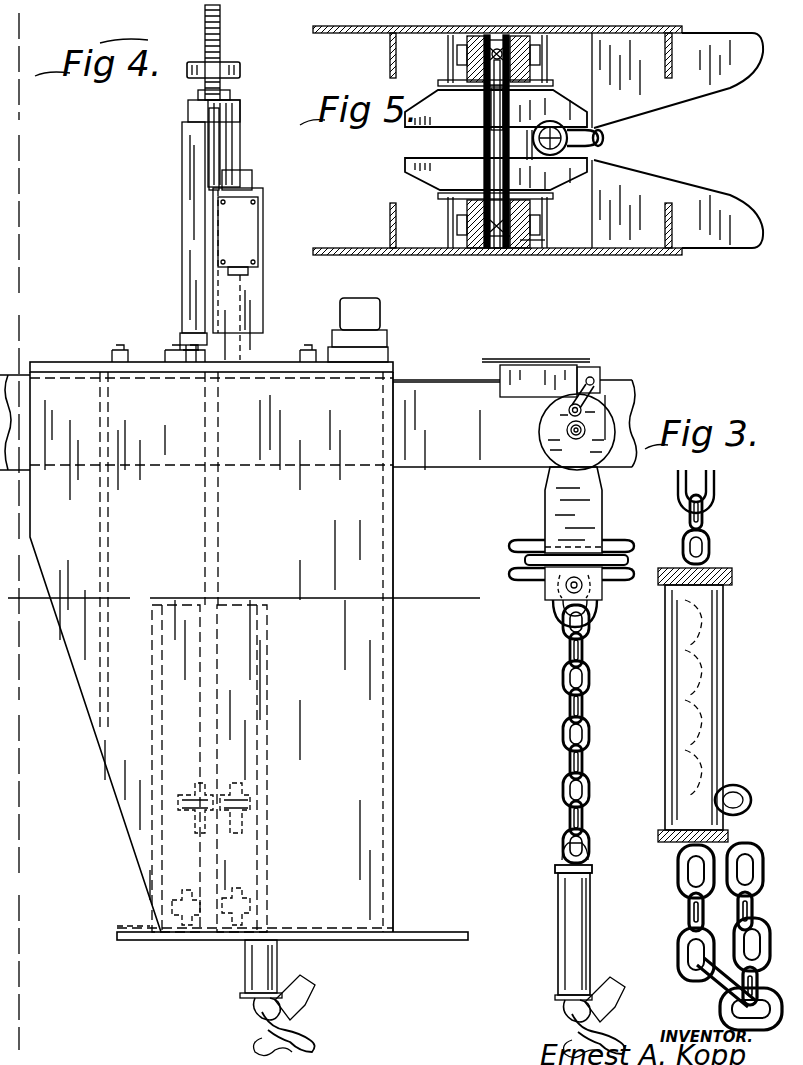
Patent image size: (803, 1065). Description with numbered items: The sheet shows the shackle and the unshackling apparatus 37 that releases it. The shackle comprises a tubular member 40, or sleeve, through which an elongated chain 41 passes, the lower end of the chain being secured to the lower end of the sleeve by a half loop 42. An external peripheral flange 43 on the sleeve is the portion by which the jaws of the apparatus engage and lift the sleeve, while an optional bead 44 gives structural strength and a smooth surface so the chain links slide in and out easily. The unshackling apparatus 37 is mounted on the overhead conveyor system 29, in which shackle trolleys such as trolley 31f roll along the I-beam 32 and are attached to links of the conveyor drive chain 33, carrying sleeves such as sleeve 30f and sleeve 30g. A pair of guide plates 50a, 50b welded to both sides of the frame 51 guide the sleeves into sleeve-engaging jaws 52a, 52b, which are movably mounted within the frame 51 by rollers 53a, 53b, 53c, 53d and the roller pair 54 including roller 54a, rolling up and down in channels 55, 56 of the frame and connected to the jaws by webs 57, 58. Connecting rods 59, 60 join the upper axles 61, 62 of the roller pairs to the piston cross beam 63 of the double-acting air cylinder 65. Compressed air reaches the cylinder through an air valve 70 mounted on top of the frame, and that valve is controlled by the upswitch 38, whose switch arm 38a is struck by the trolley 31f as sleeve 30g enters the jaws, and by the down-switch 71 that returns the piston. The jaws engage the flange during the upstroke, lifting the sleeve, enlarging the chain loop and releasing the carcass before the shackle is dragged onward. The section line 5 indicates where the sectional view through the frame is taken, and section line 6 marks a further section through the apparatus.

In FIG. 4, the section line 5— 5 is at (25, 588).
In FIG. 4, the section line 6- 6 is at (5, 13).
In FIG. 4, the overhead conveyor system 29 is at (437, 373).
In FIG. 3, the sleeve 30f is at (558, 905).
In FIG. 4, the sleeve 30g is at (242, 956).
In FIG. 3, the shackle trolley 31f is at (546, 510).
In FIG. 4, the I-beam 32 is at (460, 436).
In FIG. 3, the conveyor drive chain 33 is at (512, 544).
In FIG. 4, the unshackling apparatus 37 is at (314, 557).
In FIG. 3, the upswitch 38 is at (530, 360).
In FIG. 3, the switch arm 38a is at (600, 400).
In FIG. 3, the tubular member 40 is at (724, 655).
In FIG. 5, the tubular member 40 is at (555, 120).
In FIG. 3, the chain 41 is at (565, 745).
In FIG. 5, the chain 41 is at (575, 155).
In FIG. 3, the half loop 42 is at (760, 775).
In FIG. 3, the external peripheral flange 43 is at (733, 577).
In FIG. 5, the external peripheral flange 43 is at (525, 160).
In FIG. 3, the bead 44 is at (660, 835).
In FIG. 4, the guide plate 50a is at (430, 932).
In FIG. 5, the guide plate 50a is at (680, 155).
In FIG. 5, the guide plate 50b is at (668, 110).
In FIG. 4, the frame 51 is at (393, 810).
In FIG. 5, the frame 51 is at (528, 30).
In FIG. 4, the sleeve-engaging jaw 52a is at (125, 932).
In FIG. 5, the sleeve-engaging jaw 52a is at (432, 160).
In FIG. 5, the sleeve-engaging jaw 52b is at (510, 118).
In FIG. 4, the roller 53a is at (255, 790).
In FIG. 5, the roller 53a is at (535, 232).
In FIG. 4, the roller 53b is at (175, 790).
In FIG. 5, the roller 53b is at (470, 237).
In FIG. 4, the roller 53c is at (245, 895).
In FIG. 4, the roller 53d is at (190, 893).
In FIG. 5, the roller pair 54 is at (531, 140).
In FIG. 5, the roller 54a is at (535, 75).
In FIG. 5, the channel 55 is at (455, 207).
In FIG. 5, the channel 56 is at (450, 43).
In FIG. 5, the web 57 is at (485, 168).
In FIG. 5, the web 58 is at (500, 108).
In FIG. 4, the connecting rod 59 is at (225, 150).
In FIG. 5, the connecting rod 59 is at (497, 248).
In FIG. 5, the connecting rod 60 is at (497, 45).
In FIG. 5, the upper axle 61 is at (460, 222).
In FIG. 5, the upper axle 62 is at (462, 45).
In FIG. 4, the piston cross beam 63 is at (242, 68).
In FIG. 4, the double-acting air cylinder 65 is at (183, 200).
In FIG. 4, the air valve 70 is at (370, 296).
In FIG. 4, the down-switch 71 is at (262, 178).